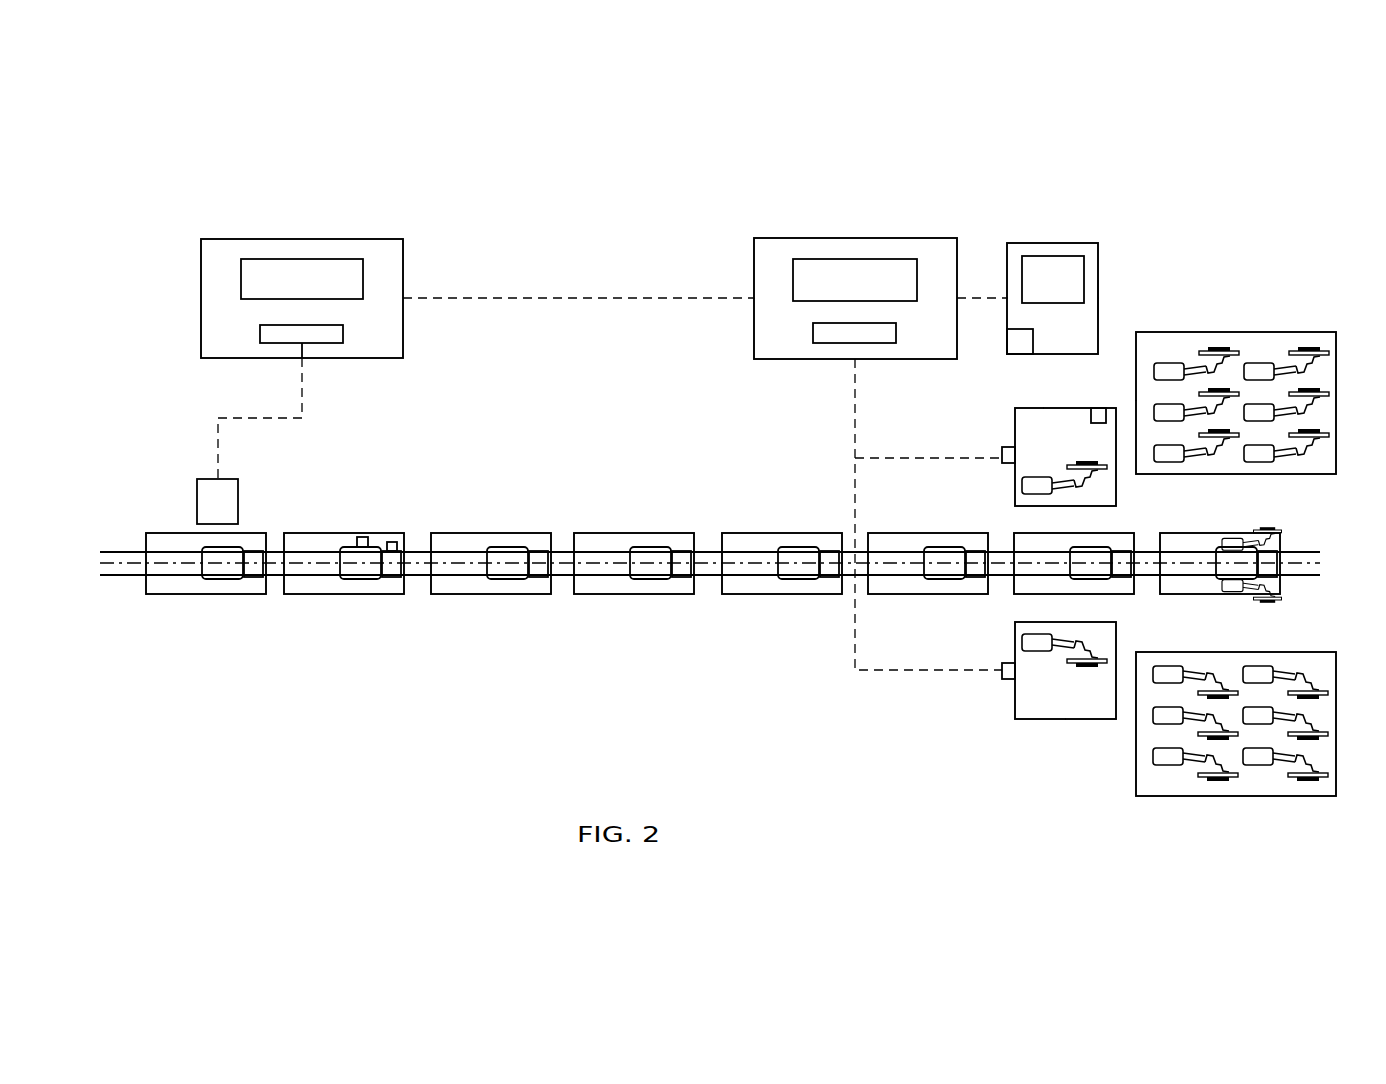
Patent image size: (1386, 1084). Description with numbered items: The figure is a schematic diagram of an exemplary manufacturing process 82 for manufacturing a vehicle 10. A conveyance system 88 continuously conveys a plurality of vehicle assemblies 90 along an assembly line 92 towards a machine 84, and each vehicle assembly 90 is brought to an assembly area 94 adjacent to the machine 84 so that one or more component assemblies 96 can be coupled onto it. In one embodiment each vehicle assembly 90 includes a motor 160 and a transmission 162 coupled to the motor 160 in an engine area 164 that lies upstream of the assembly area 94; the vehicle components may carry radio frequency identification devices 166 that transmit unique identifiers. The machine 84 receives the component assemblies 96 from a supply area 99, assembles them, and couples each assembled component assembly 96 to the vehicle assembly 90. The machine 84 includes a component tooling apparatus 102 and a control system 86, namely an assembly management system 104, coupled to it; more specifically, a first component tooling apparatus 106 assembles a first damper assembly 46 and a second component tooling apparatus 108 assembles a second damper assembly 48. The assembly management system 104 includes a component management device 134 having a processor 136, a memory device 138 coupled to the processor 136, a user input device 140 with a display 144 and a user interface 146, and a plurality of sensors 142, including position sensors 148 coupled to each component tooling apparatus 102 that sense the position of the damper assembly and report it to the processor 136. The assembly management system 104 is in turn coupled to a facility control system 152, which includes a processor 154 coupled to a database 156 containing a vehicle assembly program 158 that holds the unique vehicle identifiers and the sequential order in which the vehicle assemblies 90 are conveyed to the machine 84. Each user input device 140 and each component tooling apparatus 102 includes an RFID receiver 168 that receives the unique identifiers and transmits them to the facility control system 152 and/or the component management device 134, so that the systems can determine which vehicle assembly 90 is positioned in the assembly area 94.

The vehicle 10 is at (1301, 530).
The first damper assembly 46 is at (1040, 477).
The second damper assembly 48 is at (1038, 650).
The manufacturing process 82 is at (1096, 193).
The machine 84 is at (1177, 296).
The control system 86 is at (931, 204).
The conveyance system 88 is at (562, 533).
The vehicle assembly 90 is at (258, 533).
The assembly line 92 is at (765, 518).
The assembly area 94 is at (1152, 531).
The component assembly 96 is at (1269, 347).
The supply area 99 is at (1237, 332).
The component tooling apparatus 102 is at (1043, 408).
The assembly management system 104 is at (1016, 201).
The first component tooling apparatus 106 is at (1015, 431).
The second component tooling apparatus 108 is at (1015, 710).
The component management device 134 is at (857, 238).
The processor 136 is at (793, 280).
The memory device 138 is at (814, 333).
The user input device 140 is at (1098, 250).
The sensor 142 is at (1002, 460).
The display 144 is at (1099, 300).
The user interface 146 is at (1084, 280).
The position sensor 148 is at (1002, 677).
The facility control system 152 is at (393, 239).
The processor 154 is at (302, 259).
The database 156 is at (345, 329).
The vehicle assembly program 158 is at (322, 343).
The motor 160 is at (222, 580).
The transmission 162 is at (252, 580).
The engine area 164 is at (156, 624).
The radio frequency identification device 166 is at (363, 537).
The RFID receiver 168 is at (238, 490).